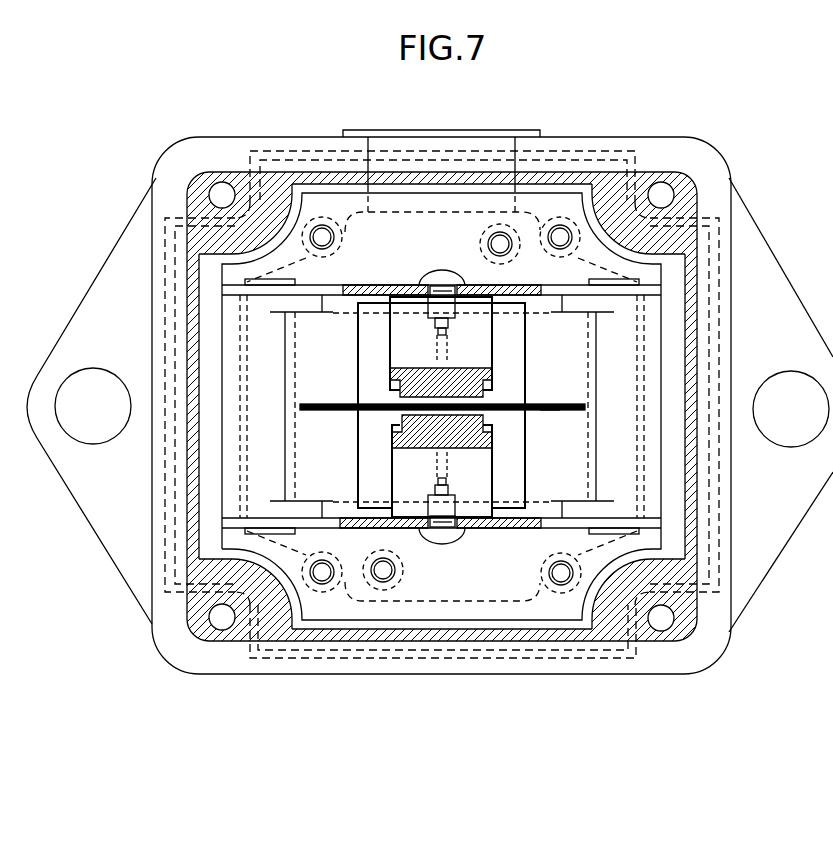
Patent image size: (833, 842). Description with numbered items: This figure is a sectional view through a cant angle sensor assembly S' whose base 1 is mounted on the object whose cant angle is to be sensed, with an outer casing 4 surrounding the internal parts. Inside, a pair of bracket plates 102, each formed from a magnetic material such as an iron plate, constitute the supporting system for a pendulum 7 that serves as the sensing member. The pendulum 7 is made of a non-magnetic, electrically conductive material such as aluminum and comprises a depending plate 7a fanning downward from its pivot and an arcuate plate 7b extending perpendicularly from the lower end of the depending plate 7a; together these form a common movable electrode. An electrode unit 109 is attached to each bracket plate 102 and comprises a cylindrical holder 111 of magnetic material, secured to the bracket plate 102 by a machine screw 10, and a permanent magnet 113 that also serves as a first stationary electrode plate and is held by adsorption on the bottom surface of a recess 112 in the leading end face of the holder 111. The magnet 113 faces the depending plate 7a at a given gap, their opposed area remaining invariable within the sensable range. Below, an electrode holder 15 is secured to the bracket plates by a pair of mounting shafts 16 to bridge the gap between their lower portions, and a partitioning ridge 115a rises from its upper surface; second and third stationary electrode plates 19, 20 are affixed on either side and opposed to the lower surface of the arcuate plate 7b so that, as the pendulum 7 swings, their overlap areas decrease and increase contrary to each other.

The base 1 is at (113, 249).
The switch assembly S' is at (463, 255).
The outer casing 4 is at (692, 487).
The electrode holder 15 is at (653, 436).
The mounting shafts 16 is at (298, 331).
The second stationary electrode plate 19 is at (305, 365).
The third stationary electrode plate 20 is at (585, 333).
The bracket plates 102 is at (368, 285).
The machine screw 10 is at (442, 273).
The partitioning ridge 115a is at (500, 358).
The electrode unit 109 is at (493, 331).
The recess 112 is at (428, 366).
The cylindrical holder 111 is at (478, 340).
The permanent magnet 113 is at (422, 409).
The pendulum 7 is at (549, 403).
The depending plate 7a is at (549, 411).
The arcuate plate 7b is at (525, 473).